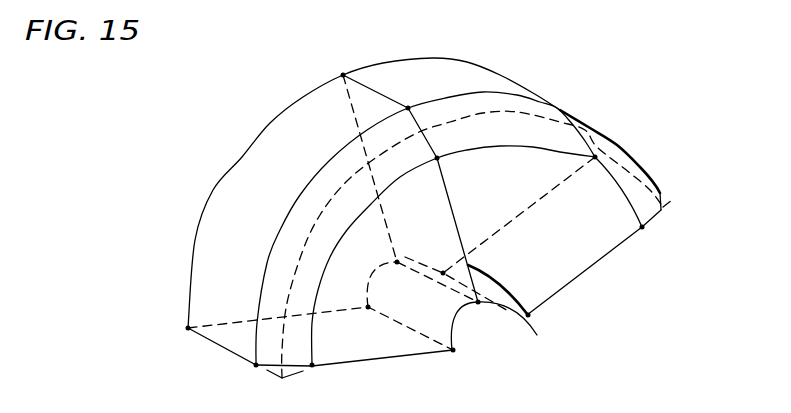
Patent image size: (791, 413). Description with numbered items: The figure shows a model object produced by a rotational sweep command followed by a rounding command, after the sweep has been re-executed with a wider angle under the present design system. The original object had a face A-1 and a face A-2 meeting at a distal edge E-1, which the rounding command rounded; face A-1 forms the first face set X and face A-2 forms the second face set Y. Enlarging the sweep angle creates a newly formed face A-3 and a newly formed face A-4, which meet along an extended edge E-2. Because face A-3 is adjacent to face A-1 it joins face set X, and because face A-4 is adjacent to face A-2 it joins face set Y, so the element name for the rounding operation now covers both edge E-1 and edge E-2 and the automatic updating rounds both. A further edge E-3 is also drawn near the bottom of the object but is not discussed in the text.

The face A-1 is at (383, 337).
The face A-2 is at (258, 170).
The face A-3 is at (563, 255).
The face A-4 is at (470, 87).
The distal edge E-1 is at (313, 230).
The extended edge E-2 is at (617, 144).
The inner edge E-3 is at (504, 315).